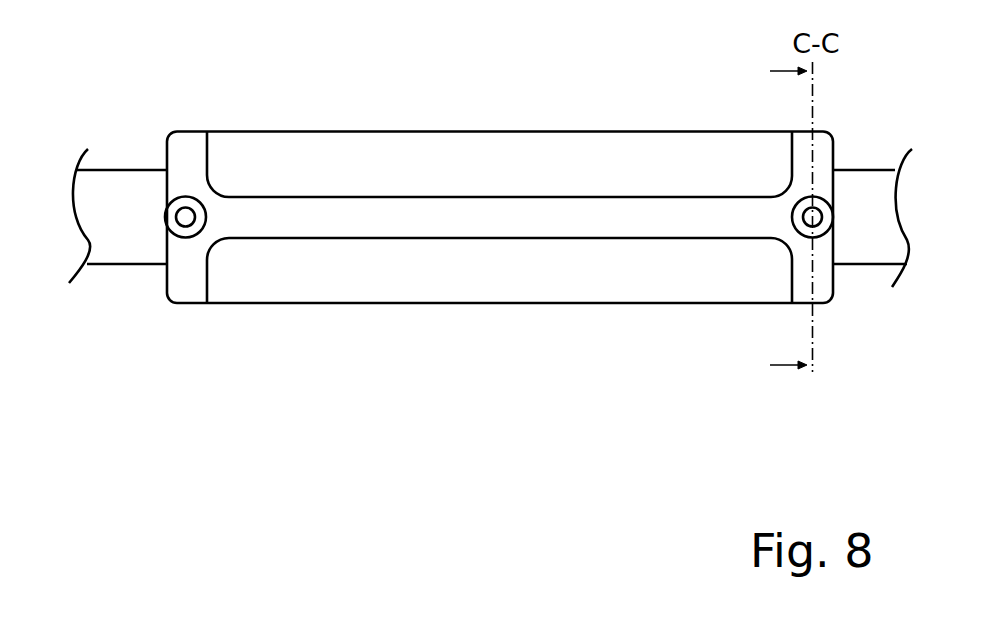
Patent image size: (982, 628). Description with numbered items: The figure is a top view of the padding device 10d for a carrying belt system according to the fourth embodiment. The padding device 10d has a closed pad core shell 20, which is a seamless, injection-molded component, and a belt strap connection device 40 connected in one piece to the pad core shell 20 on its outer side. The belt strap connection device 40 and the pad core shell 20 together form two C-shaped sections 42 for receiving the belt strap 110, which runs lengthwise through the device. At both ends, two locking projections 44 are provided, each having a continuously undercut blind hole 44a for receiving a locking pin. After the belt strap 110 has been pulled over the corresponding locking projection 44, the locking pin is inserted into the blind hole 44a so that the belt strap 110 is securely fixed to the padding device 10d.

The padding device 10d is at (224, 99).
The pad core shell 20 is at (195, 303).
The belt strap connection device 40 is at (547, 322).
The C-shaped section 42 is at (389, 158).
The locking projection 44 is at (793, 207).
The blind hole 44a is at (186, 197).
The belt strap 110 is at (585, 215).